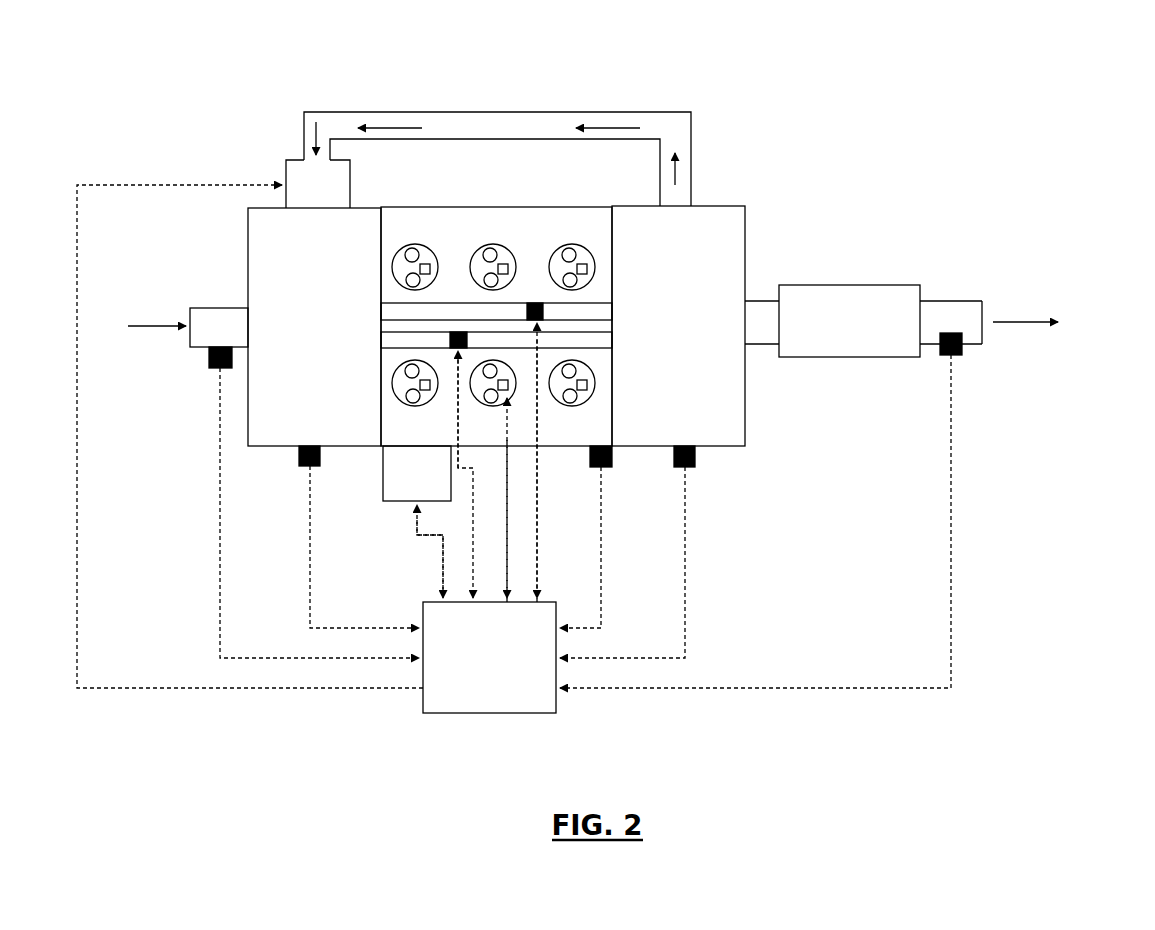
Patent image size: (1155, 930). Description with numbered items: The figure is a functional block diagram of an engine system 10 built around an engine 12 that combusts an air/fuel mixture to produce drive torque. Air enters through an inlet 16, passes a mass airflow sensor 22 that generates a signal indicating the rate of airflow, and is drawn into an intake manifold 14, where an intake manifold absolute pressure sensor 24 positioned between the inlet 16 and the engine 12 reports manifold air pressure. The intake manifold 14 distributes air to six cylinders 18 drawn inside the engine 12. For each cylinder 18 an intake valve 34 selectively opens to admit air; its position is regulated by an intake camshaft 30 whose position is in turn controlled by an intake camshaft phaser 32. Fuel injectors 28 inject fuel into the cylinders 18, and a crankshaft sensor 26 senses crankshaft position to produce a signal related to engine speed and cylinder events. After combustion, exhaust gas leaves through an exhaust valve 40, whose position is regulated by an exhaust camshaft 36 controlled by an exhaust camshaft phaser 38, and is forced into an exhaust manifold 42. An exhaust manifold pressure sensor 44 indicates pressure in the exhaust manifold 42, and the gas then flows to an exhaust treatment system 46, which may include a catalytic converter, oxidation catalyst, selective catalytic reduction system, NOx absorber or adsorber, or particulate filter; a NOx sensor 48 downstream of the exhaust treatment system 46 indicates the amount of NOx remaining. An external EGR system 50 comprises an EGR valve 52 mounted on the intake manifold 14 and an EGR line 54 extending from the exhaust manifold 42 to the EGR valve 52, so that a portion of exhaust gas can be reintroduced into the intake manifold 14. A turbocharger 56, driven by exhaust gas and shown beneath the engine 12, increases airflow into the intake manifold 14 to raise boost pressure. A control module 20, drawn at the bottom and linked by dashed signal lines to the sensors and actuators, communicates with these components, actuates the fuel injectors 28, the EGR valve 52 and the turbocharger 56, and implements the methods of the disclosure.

The engine system 10 is at (238, 82).
The engine 12 is at (497, 207).
The intake manifold 14 is at (248, 234).
The inlet 16 is at (222, 308).
The cylinders 18 is at (572, 404).
The control module 20 is at (492, 713).
The mass airflow (MAF) sensor 22 is at (211, 361).
The intake manifold absolute pressure (MAP) sensor 24 is at (301, 456).
The crankshaft sensor 26 is at (612, 455).
The fuel injectors 28 is at (582, 264).
The intake camshaft 30 is at (496, 312).
The intake camshaft phaser 32 is at (531, 302).
The intake valve 34 is at (414, 255).
The exhaust camshaft 36 is at (496, 341).
The exhaust camshaft phaser 38 is at (463, 332).
The exhaust valve 40 is at (416, 403).
The exhaust manifold 42 is at (721, 205).
The exhaust manifold pressure (EMP) sensor 44 is at (695, 455).
The exhaust treatment system 46 is at (851, 285).
The NOx sensor 48 is at (959, 356).
The EGR system 50 is at (513, 94).
The EGR valve 52 is at (352, 183).
The EGR line 54 is at (628, 112).
The turbocharger 56 is at (402, 501).